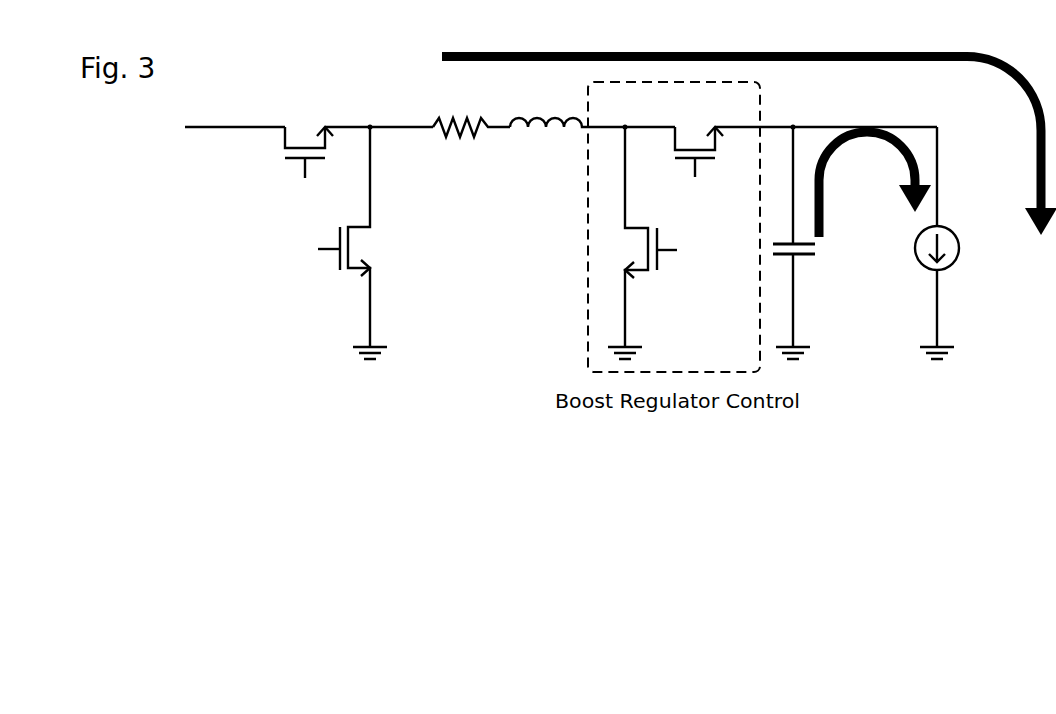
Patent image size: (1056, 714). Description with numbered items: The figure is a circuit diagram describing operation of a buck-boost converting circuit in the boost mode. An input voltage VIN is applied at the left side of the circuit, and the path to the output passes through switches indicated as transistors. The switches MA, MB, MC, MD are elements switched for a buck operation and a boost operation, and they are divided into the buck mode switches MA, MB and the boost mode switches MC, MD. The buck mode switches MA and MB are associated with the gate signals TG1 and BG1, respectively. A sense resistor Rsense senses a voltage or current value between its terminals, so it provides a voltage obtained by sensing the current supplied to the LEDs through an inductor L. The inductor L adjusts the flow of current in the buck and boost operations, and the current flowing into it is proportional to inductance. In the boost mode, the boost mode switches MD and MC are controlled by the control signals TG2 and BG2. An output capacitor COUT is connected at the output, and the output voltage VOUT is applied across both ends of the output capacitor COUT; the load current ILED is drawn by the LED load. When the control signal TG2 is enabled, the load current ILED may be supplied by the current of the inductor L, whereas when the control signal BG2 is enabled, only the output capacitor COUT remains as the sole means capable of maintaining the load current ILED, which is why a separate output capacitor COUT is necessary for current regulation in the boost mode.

The input voltage VIN is at (216, 132).
The switch MA is at (309, 127).
The top gate signal 1 TG1 is at (303, 183).
The switch MB is at (370, 243).
The bottom gate signal 1 BG1 is at (306, 250).
The sense resistor Rsense is at (471, 111).
The inductor L is at (592, 106).
The switch MC is at (627, 243).
The control signal BG2 is at (794, 197).
The switch MD is at (699, 128).
The control signal TG2 is at (749, 129).
The output capacitor COUT is at (824, 243).
The output voltage VOUT is at (965, 171).
The load current ILED is at (962, 292).